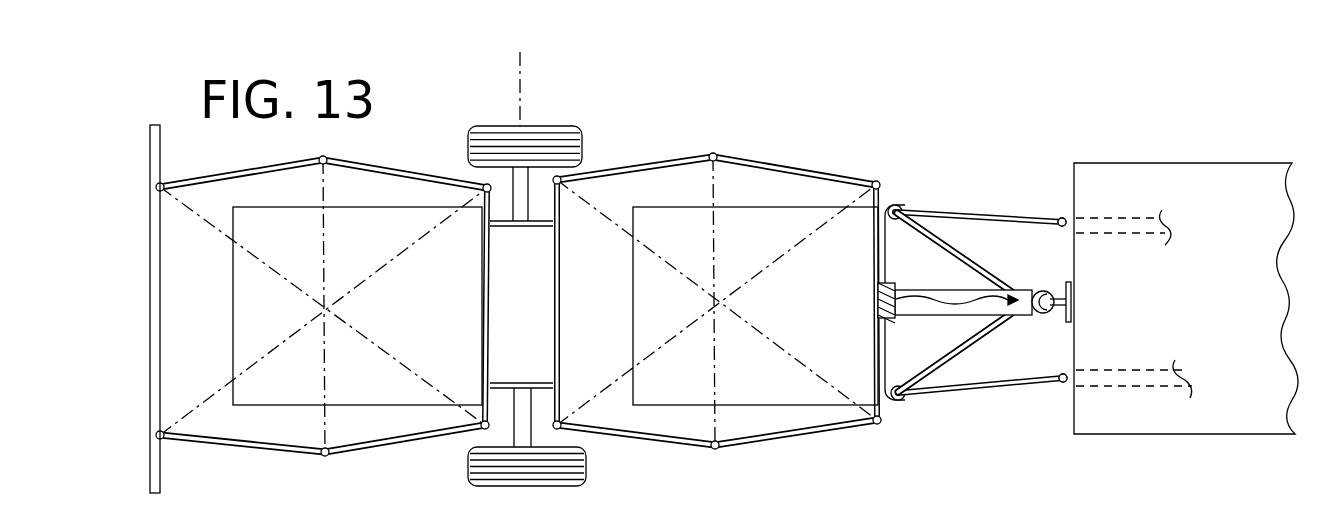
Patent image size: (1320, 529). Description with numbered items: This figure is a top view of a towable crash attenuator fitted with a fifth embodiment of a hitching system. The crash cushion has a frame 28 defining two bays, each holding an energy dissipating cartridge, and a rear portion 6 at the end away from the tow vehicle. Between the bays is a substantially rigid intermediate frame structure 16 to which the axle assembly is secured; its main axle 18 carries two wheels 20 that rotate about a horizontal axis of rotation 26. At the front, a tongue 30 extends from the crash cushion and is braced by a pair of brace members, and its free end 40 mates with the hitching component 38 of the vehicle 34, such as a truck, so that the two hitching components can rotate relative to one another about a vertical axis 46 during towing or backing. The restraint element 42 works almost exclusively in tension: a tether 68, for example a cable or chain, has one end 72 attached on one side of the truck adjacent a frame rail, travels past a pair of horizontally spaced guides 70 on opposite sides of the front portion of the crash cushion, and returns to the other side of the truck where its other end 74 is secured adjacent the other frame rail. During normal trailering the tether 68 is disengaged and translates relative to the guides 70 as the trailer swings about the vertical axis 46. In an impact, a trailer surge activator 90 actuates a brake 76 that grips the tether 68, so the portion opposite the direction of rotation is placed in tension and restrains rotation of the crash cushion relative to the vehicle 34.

The rear portion 6 is at (157, 435).
The frame structure 16 is at (506, 322).
The main axle 18 is at (525, 208).
The wheel 20 is at (565, 130).
The horizontal axis of rotation 26 is at (518, 85).
The frame 28 is at (276, 455).
The tongue 30 is at (952, 293).
The vehicle 34 is at (1220, 282).
The hitching component 38 is at (1075, 298).
The free end 40 is at (1040, 320).
The restraint element 42 is at (1008, 210).
The vertical axis 46 is at (1043, 291).
The tether 68 is at (972, 385).
The guide 70 is at (897, 402).
The tether end 72 is at (1055, 218).
The other tether end 74 is at (1063, 385).
The brake 76 is at (880, 305).
The trailer surge activator 90 is at (1012, 292).